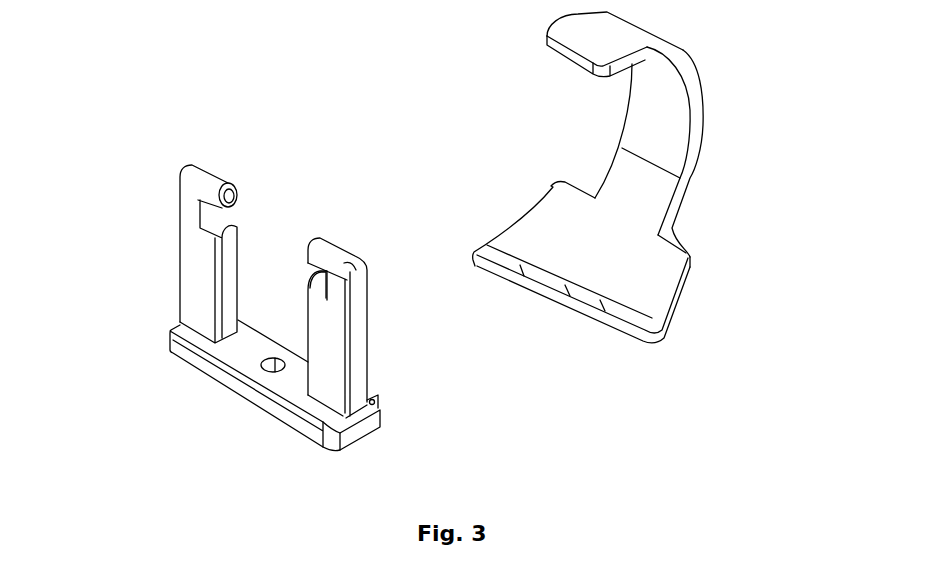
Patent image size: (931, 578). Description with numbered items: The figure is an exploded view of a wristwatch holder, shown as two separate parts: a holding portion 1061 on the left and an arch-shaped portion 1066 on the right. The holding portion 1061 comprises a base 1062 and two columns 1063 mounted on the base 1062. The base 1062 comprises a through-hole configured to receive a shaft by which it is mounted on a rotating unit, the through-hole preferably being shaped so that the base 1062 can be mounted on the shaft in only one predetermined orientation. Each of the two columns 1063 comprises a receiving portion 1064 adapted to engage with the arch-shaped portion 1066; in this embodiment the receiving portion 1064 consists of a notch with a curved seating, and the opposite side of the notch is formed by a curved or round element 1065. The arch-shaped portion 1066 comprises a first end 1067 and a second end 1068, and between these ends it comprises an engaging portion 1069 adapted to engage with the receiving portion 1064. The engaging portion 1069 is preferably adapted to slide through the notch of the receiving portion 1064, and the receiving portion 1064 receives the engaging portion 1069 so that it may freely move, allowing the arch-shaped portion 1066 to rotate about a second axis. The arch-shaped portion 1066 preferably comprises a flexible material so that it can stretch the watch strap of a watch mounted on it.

The holding portion 1061 is at (278, 160).
The base 1062 is at (265, 407).
The columns 1063 is at (183, 293).
The receiving portion 1064 is at (322, 285).
The curved or round element 1065 is at (203, 183).
The arch-shaped portion 1066 is at (641, 374).
The first end 1067 is at (547, 300).
The second end 1068 is at (701, 117).
The engaging portion 1069 is at (667, 288).